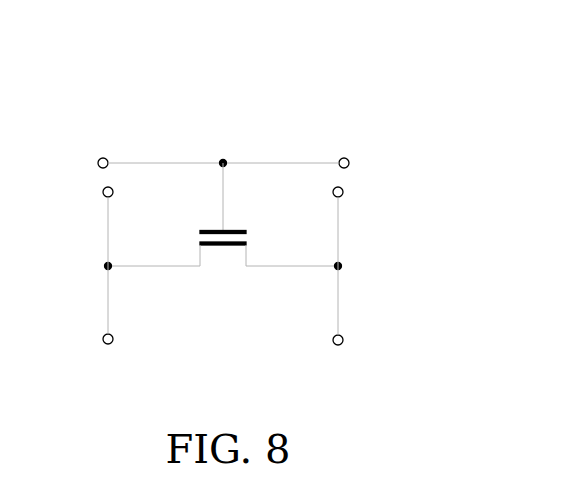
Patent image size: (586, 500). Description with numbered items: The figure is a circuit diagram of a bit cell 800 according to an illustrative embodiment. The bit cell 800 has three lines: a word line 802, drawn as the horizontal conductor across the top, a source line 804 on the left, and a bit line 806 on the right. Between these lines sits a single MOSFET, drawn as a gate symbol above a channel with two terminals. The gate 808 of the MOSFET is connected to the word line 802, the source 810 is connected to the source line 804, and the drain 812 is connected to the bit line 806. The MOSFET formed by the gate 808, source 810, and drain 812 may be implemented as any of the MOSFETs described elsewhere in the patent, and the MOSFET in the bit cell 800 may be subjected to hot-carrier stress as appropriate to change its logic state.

The bit cell 800 is at (301, 97).
The word line 802 is at (280, 164).
The source line 804 is at (107, 300).
The bit line 806 is at (340, 300).
The gate 808 is at (207, 229).
The source 810 is at (153, 267).
The drain 812 is at (292, 267).